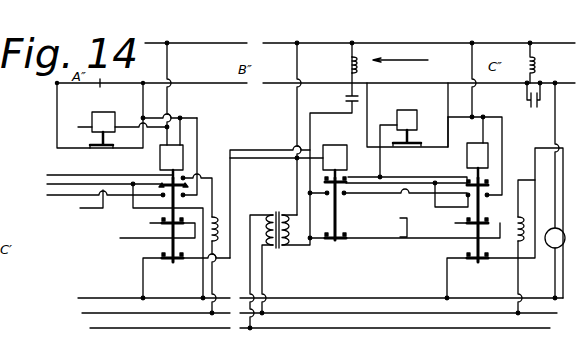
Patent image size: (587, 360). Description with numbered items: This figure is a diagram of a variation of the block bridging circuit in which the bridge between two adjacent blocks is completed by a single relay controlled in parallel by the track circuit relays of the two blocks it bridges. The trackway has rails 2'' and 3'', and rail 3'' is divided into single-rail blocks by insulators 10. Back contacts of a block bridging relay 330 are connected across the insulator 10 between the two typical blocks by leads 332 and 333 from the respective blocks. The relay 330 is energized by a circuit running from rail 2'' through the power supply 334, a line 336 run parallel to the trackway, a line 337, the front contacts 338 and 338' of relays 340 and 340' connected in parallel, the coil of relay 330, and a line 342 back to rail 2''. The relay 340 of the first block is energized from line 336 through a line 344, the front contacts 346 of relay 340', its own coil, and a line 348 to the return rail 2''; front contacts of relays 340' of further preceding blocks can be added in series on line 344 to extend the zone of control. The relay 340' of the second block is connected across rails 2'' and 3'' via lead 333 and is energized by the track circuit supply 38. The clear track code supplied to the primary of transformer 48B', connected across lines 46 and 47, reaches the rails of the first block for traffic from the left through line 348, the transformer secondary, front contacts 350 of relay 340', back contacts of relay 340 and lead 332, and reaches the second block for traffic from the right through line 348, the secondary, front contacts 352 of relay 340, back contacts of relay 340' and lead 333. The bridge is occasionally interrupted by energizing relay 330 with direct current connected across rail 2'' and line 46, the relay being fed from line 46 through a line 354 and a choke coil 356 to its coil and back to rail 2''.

The rail 2'' is at (360, 35).
The rail 3'' is at (400, 53).
The insulator 10 is at (408, 83).
The track circuit supply 38 is at (345, 102).
The line 46 is at (398, 312).
The line 47 is at (442, 328).
The transformer 48B' is at (279, 271).
The block bridging relay 330 is at (432, 104).
The lead 332 is at (362, 92).
The lead 333 is at (444, 112).
The power supply 334 is at (555, 251).
The line 336 is at (364, 296).
The line 337 is at (510, 287).
The front contact 338 is at (389, 208).
The front contact 338' is at (489, 155).
The relay 340 is at (405, 160).
The relay 340' is at (148, 161).
The line 342 is at (472, 102).
The line 344 is at (138, 290).
The front contact 346 is at (160, 265).
The line 348 is at (287, 120).
The front contact 350 is at (470, 225).
The front contact 352 is at (344, 227).
The line 354 is at (514, 312).
The choke coil 356 is at (515, 241).